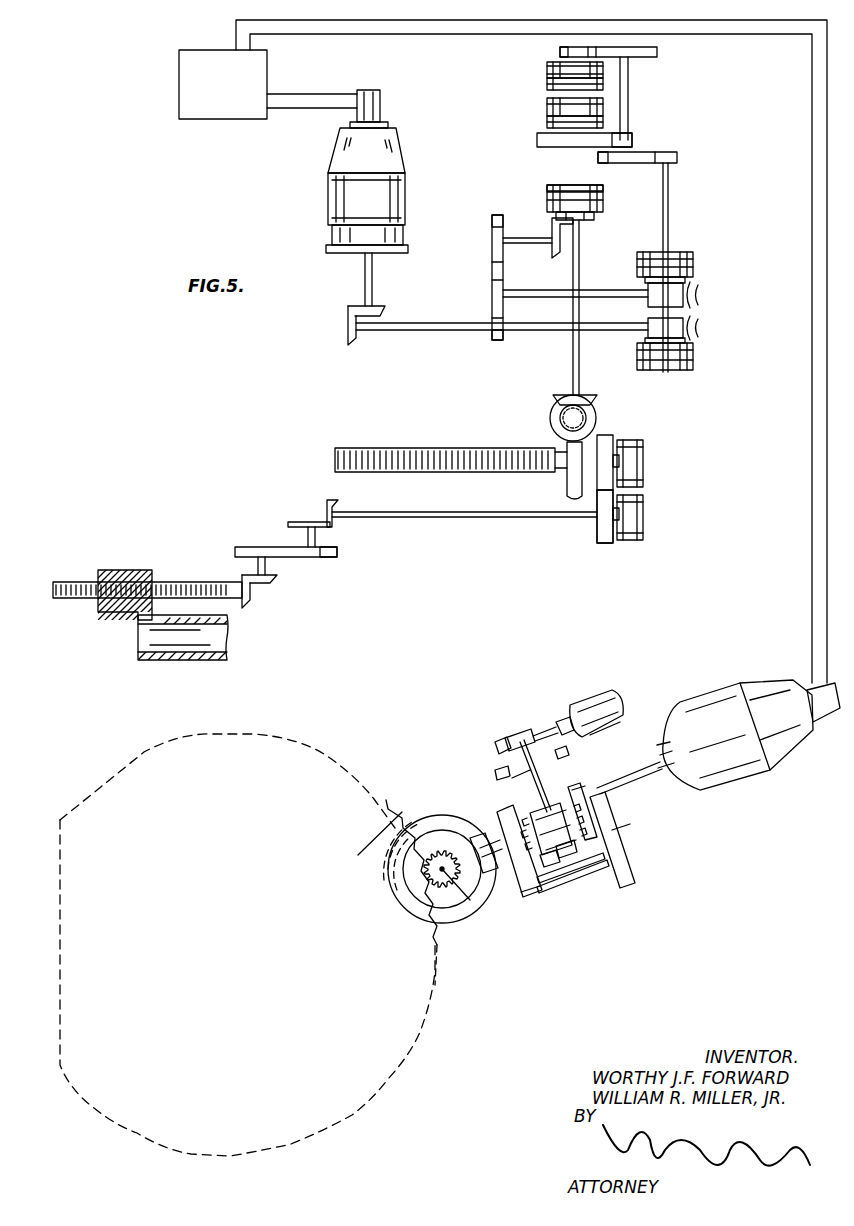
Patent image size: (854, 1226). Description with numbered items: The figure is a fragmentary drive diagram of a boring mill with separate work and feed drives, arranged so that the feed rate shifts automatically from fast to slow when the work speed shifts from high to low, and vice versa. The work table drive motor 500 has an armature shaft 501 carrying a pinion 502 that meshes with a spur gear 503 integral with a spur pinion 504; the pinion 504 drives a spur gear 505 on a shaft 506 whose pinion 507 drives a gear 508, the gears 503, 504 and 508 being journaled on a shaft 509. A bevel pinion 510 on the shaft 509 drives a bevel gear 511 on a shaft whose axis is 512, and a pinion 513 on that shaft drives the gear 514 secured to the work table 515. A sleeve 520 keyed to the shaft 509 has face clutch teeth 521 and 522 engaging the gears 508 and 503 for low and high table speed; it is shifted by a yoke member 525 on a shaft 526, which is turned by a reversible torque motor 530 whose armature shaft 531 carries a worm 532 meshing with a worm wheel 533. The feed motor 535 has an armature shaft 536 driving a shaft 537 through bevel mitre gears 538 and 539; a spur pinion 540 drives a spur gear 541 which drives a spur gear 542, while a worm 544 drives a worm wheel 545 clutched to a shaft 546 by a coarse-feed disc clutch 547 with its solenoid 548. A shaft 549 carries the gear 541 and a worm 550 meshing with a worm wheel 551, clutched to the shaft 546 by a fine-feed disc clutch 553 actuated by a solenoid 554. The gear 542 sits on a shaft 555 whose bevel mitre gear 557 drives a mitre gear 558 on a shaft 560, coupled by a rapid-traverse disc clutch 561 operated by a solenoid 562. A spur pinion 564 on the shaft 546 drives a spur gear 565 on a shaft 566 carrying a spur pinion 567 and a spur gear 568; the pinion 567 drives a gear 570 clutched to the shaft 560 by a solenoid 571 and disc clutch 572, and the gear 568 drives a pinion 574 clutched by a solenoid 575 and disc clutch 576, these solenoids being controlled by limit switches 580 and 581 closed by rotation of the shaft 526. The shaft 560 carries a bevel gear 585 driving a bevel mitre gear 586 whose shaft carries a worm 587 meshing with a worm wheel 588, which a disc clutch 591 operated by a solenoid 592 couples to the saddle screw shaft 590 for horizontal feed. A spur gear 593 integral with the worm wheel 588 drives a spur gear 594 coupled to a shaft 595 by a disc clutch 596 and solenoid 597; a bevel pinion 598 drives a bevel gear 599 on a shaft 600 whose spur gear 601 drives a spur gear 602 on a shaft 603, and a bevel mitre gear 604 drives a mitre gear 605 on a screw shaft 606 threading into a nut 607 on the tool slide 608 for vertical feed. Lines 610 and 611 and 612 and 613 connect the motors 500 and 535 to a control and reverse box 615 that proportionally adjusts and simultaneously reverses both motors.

The work table drive motor 500 is at (730, 778).
The armature shaft 501 is at (636, 773).
The pinion 502 is at (598, 778).
The spur gear 503 is at (605, 868).
The spur pinion 504 is at (611, 818).
The spur gear 505 is at (627, 858).
The shaft 506 is at (574, 885).
The pinion 507 is at (535, 898).
The gear 508 is at (507, 826).
The shaft 509 is at (588, 775).
The bevel pinion 510 is at (492, 875).
The bevel gear 511 is at (435, 815).
The shaft axis 512 is at (442, 871).
The pinion 513 is at (470, 900).
The gear 514 is at (440, 942).
The work table 515 is at (397, 866).
The clutch sleeve 520 is at (538, 815).
The face clutch teeth 521 is at (546, 867).
The face clutch teeth 522 is at (568, 853).
The yoke member 525 is at (545, 793).
The shaft 526 is at (511, 780).
The torque motor 530 is at (586, 695).
The armature shaft 531 is at (547, 716).
The worm 532 is at (521, 733).
The worm wheel 533 is at (500, 735).
The variable speed feed motor 535 is at (404, 190).
The armature shaft 536 is at (373, 292).
The shaft 537 is at (452, 331).
The bevel mitre gear 538 is at (387, 313).
The bevel mitre gear 539 is at (357, 339).
The spur pinion 540 is at (499, 343).
The spur gear 541 is at (491, 294).
The spur gear 542 is at (492, 222).
The worm 544 is at (695, 325).
The worm wheel 545 is at (730, 335).
The shaft 546 is at (669, 214).
The disc clutch 547 is at (700, 352).
The clutch solenoid 548 is at (693, 366).
The shaft 549 is at (559, 292).
The worm 550 is at (695, 292).
The worm wheel 551 is at (706, 297).
The disc clutch 553 is at (644, 268).
The solenoid 554 is at (690, 258).
The shaft 555 is at (529, 237).
The bevel mitre gear 557 is at (557, 250).
The bevel mitre gear 558 is at (595, 222).
The shaft 560 is at (581, 372).
The disc clutch 561 is at (604, 206).
The solenoid 562 is at (566, 190).
The spur pinion 564 is at (678, 158).
The spur gear 565 is at (606, 163).
The shaft 566 is at (629, 103).
The spur pinion 567 is at (633, 140).
The spur gear 568 is at (660, 53).
The spur gear 570 is at (540, 140).
The solenoid 571 is at (552, 108).
The disc clutch 572 is at (548, 123).
The spur pinion 574 is at (559, 50).
The solenoid 575 is at (548, 85).
The disc clutch 576 is at (548, 73).
The limit switch 580 is at (499, 768).
The limit switch 581 is at (556, 744).
The bevel gear 585 is at (561, 396).
The bevel mitre gear 586 is at (597, 418).
The worm 587 is at (560, 412).
The worm wheel 588 is at (569, 489).
The screw shaft 590 is at (516, 460).
The disc clutch 591 is at (636, 443).
The solenoid 592 is at (644, 463).
The spur gear 593 is at (605, 442).
The spur gear 594 is at (597, 532).
The shaft 595 is at (484, 518).
The disc clutch 596 is at (628, 538).
The solenoid 597 is at (645, 511).
The bevel pinion 598 is at (339, 503).
The bevel gear 599 is at (306, 521).
The shaft 600 is at (317, 538).
The spur gear 601 is at (338, 554).
The spur gear 602 is at (248, 548).
The shaft 603 is at (267, 567).
The bevel mitre gear 604 is at (272, 584).
The bevel mitre gear 605 is at (251, 599).
The screw shaft 606 is at (200, 582).
The nut 607 is at (120, 570).
The tool slide 608 is at (140, 635).
The line 610 is at (348, 22).
The line 611 is at (330, 38).
The line 612 is at (338, 92).
The line 613 is at (286, 112).
The electrical control and reverse box 615 is at (231, 112).